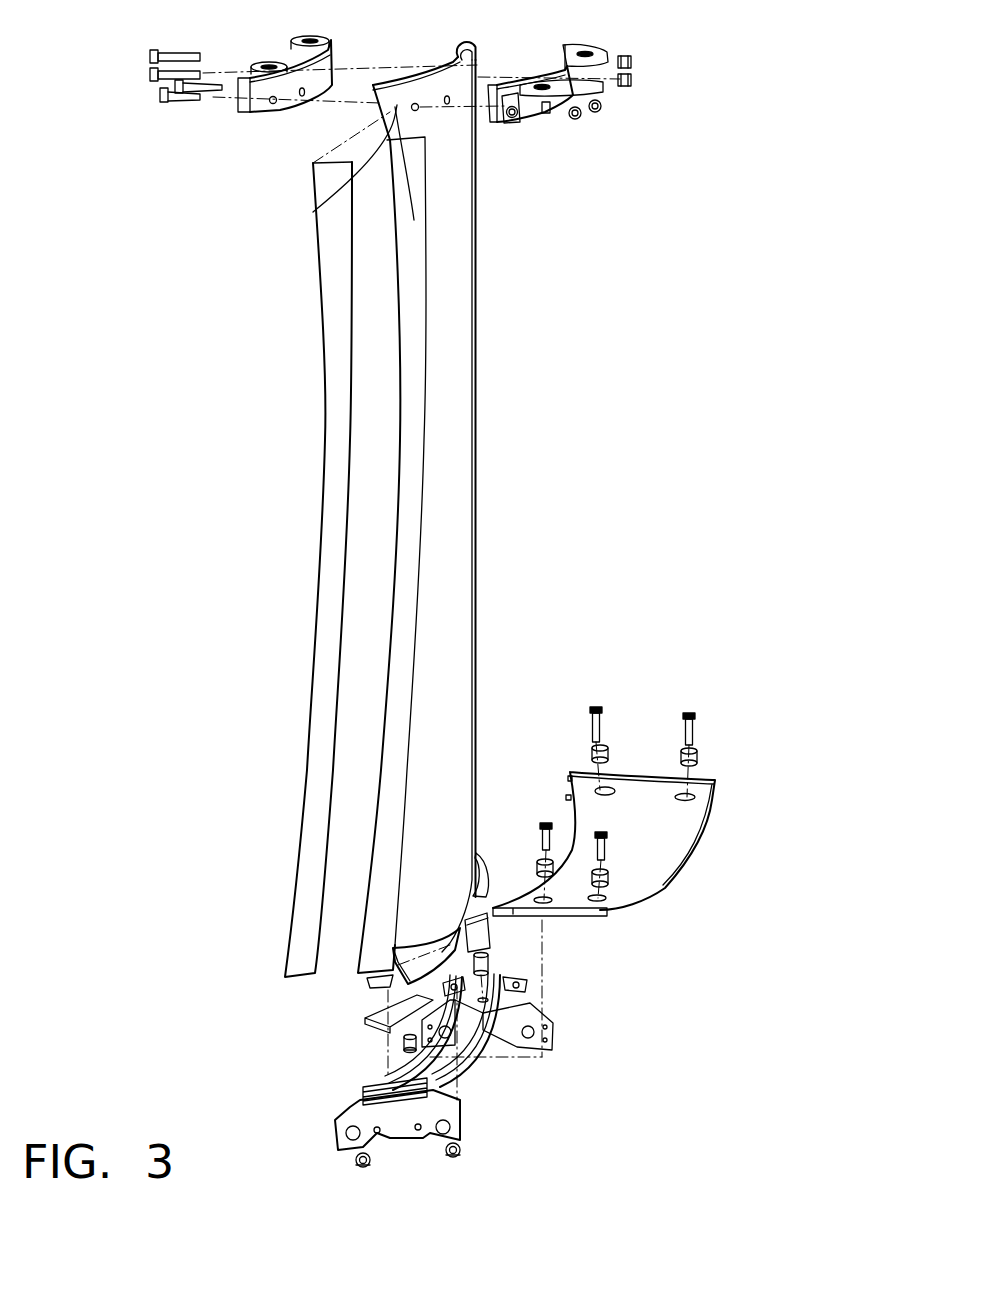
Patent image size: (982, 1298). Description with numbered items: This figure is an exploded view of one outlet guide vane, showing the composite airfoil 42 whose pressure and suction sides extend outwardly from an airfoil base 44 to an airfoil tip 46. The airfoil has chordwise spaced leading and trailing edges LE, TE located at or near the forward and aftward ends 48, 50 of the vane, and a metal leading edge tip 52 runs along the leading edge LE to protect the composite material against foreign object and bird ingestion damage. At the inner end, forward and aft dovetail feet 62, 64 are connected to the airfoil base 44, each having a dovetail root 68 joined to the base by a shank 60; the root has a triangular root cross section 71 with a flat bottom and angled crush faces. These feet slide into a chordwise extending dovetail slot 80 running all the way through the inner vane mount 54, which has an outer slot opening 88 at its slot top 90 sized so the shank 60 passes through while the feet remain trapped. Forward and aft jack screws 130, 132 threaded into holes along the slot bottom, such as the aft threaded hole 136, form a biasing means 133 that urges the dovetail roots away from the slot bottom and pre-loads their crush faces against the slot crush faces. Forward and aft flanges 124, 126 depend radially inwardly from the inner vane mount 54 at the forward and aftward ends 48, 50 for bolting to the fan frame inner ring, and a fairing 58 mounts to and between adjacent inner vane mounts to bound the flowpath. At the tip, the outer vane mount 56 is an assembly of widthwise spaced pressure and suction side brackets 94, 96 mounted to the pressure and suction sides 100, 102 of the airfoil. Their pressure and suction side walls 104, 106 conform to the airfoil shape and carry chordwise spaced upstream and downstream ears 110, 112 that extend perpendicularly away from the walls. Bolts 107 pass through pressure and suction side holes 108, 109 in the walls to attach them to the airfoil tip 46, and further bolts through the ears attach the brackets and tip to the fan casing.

The composite airfoil 42 is at (448, 473).
The airfoil base 44 is at (437, 943).
The airfoil tip 46 is at (320, 198).
The forward end 48 is at (363, 1095).
The aftward end 50 is at (500, 982).
The metal leading edge tip 52 is at (325, 388).
The inner vane mount 54 is at (615, 1062).
The outer vane mount 56 is at (236, 58).
The fairings 58 is at (645, 775).
The shank 60 is at (392, 950).
The forward dovetail foot 62 is at (385, 988).
The aft dovetail foot 64 is at (477, 858).
The dovetail root 68 is at (490, 870).
The triangular root cross section 71 is at (370, 981).
The dovetail slot 80 is at (490, 1007).
The outer slot opening 88 is at (540, 1043).
The slot top 90 is at (467, 1057).
The pressure side bracket 94 is at (331, 62).
The suction side bracket 96 is at (570, 88).
The pressure side 100 is at (446, 66).
The suction side 102 is at (455, 170).
The pressure side wall 104 is at (299, 38).
The suction side wall 106 is at (562, 72).
The bolts 107 is at (212, 90).
The pressure side holes 108 is at (333, 70).
The suction side holes 109 is at (517, 112).
The upstream ears 110 is at (262, 64).
The downstream ears 112 is at (305, 42).
The forward flange 124 is at (390, 1143).
The aft flange 126 is at (553, 1025).
The forward jack screw 130 is at (405, 1048).
The aft jack screw 132 is at (490, 982).
The biasing means 133 is at (518, 943).
The aft threaded hole 136 is at (507, 1000).
The trailing edge TE is at (468, 38).
The leading edge LE is at (383, 120).